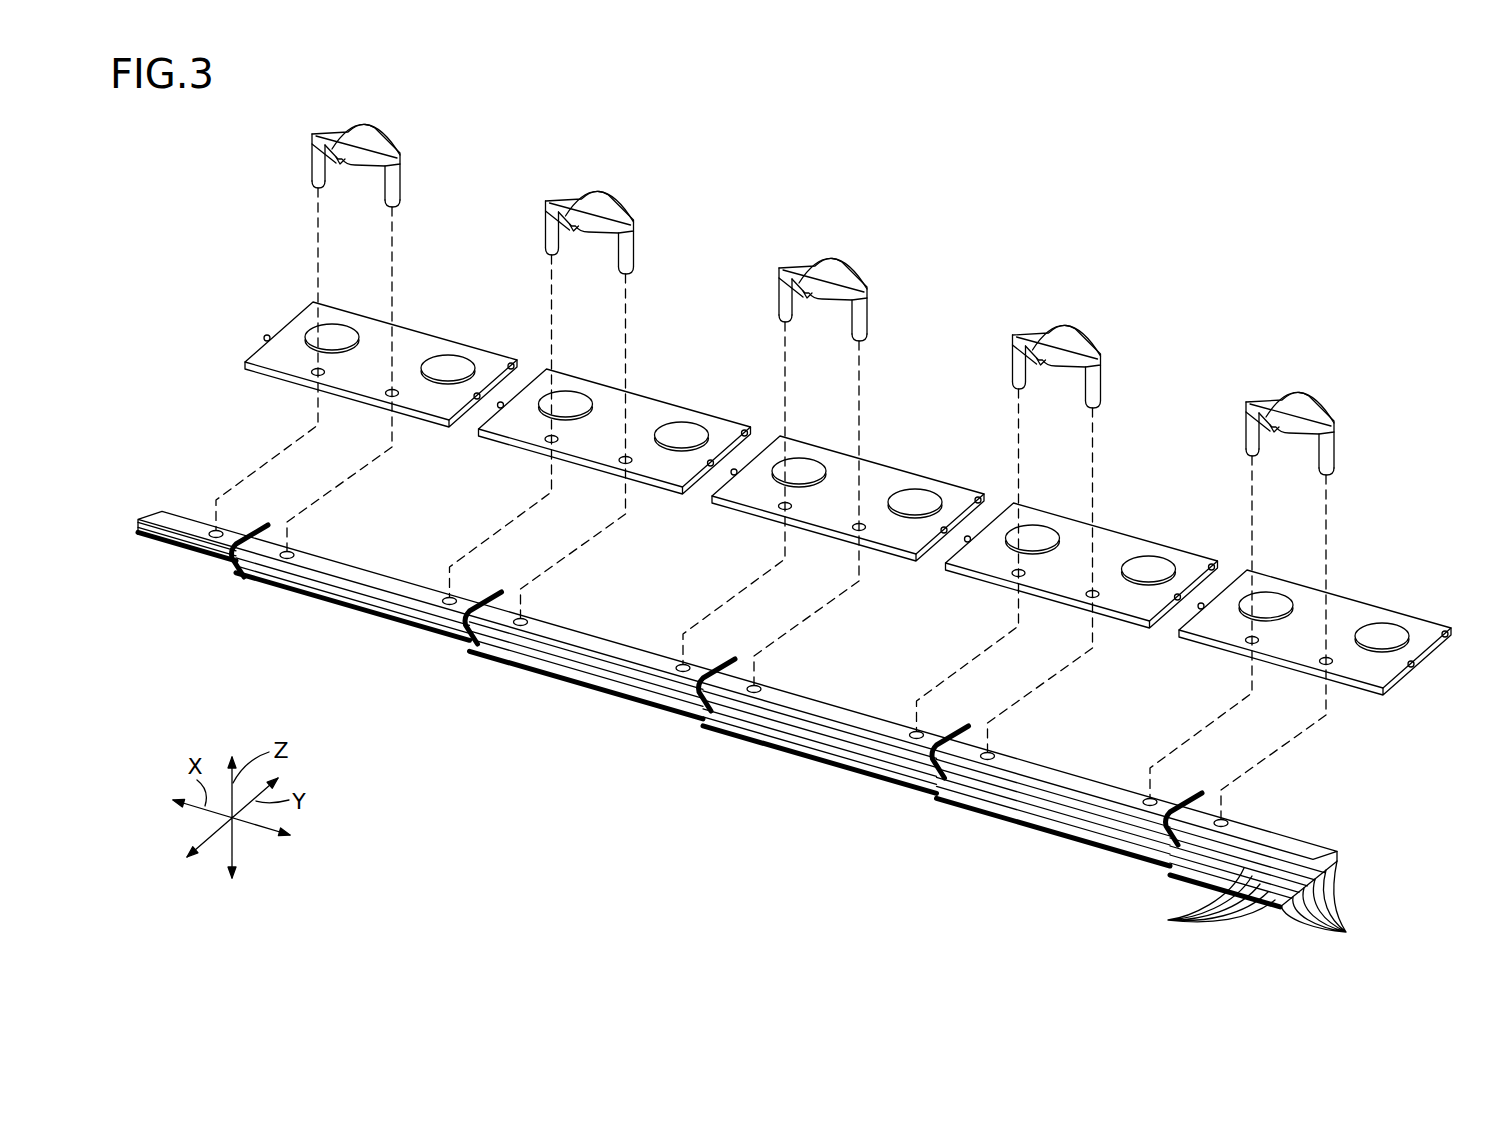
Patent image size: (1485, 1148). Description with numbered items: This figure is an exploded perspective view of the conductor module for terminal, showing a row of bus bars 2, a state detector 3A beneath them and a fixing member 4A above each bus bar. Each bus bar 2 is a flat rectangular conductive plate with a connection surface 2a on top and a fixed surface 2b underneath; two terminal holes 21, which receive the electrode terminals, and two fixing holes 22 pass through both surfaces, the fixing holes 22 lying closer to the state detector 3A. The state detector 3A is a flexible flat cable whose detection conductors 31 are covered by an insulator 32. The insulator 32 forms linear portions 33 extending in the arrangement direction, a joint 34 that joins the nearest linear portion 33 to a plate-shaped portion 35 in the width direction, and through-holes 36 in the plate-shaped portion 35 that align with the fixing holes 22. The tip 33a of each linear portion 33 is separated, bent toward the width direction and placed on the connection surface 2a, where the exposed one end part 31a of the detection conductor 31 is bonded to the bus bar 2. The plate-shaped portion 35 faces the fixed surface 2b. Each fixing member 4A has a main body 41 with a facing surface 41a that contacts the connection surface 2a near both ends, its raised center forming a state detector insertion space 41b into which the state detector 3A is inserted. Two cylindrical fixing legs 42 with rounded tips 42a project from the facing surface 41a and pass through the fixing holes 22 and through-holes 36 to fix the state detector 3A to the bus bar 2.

The bus bar 2 is at (409, 316).
The connection surface 2a is at (312, 304).
The fixed surface 2b is at (300, 386).
The terminal hole 21 is at (333, 335).
The fixing hole 22 is at (317, 373).
The state detector 3A is at (1313, 834).
The detection conductor 31 is at (1348, 933).
The one end part 31a is at (279, 540).
The insulator 32 is at (1339, 872).
The linear portion 33 is at (1168, 920).
The tip 33a is at (240, 565).
The joint 34 is at (835, 727).
The plate-shaped portion 35 is at (1072, 788).
The through-hole 36 is at (216, 530).
The fixing member 4A is at (375, 120).
The main body 41 is at (333, 140).
The facing surface 41a is at (378, 150).
The state detector insertion space 41b is at (342, 166).
The fixing leg 42 is at (316, 158).
The tip 42a is at (313, 183).